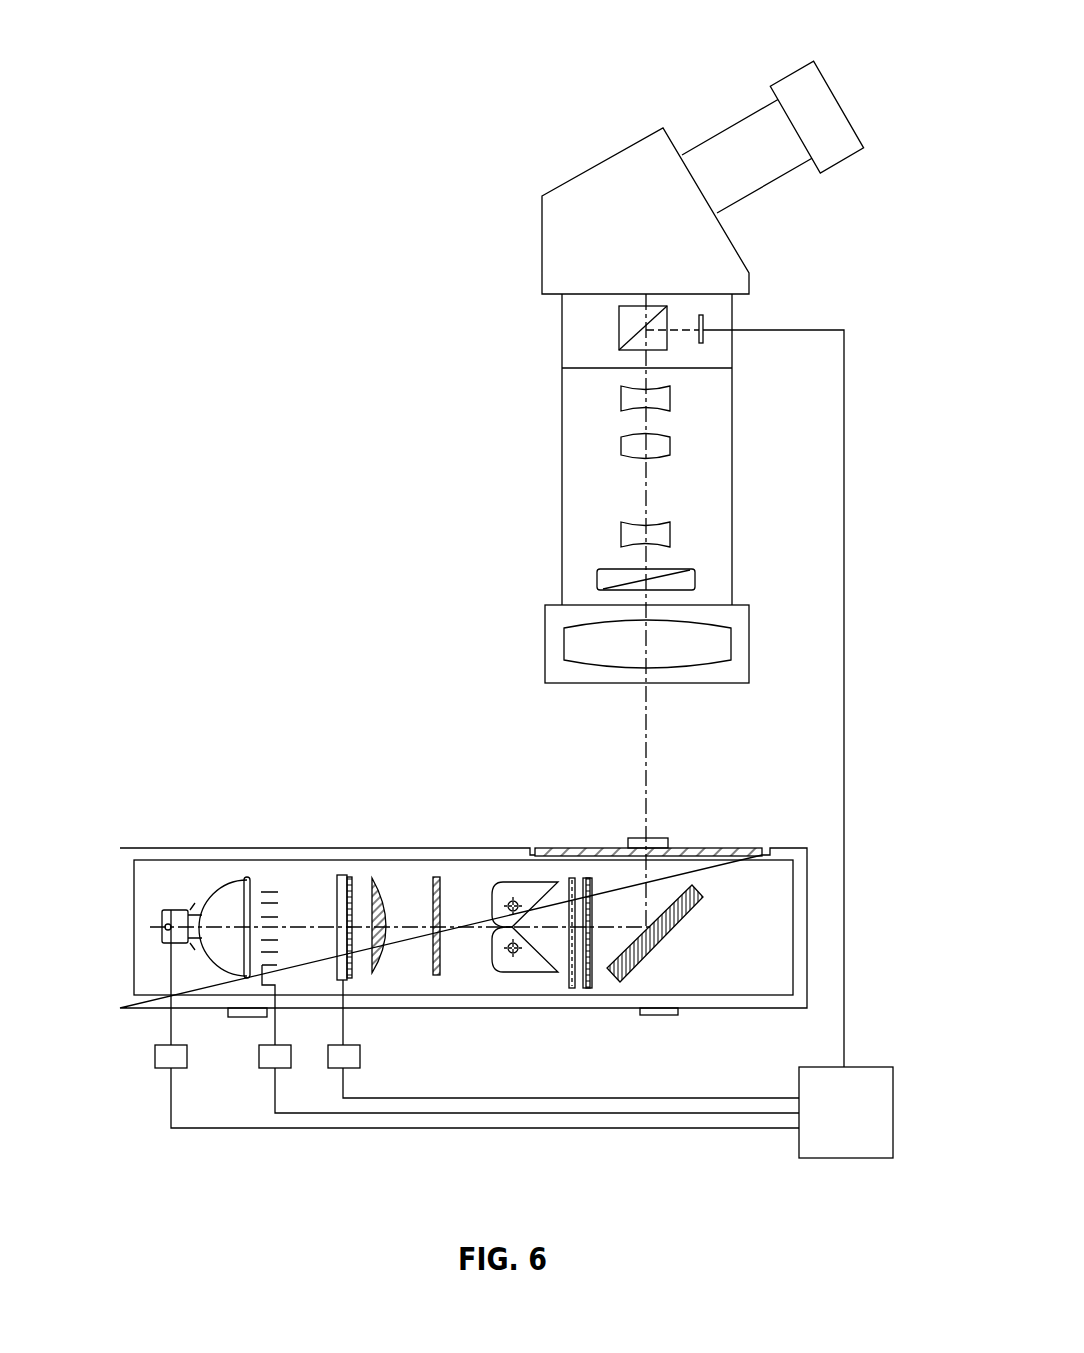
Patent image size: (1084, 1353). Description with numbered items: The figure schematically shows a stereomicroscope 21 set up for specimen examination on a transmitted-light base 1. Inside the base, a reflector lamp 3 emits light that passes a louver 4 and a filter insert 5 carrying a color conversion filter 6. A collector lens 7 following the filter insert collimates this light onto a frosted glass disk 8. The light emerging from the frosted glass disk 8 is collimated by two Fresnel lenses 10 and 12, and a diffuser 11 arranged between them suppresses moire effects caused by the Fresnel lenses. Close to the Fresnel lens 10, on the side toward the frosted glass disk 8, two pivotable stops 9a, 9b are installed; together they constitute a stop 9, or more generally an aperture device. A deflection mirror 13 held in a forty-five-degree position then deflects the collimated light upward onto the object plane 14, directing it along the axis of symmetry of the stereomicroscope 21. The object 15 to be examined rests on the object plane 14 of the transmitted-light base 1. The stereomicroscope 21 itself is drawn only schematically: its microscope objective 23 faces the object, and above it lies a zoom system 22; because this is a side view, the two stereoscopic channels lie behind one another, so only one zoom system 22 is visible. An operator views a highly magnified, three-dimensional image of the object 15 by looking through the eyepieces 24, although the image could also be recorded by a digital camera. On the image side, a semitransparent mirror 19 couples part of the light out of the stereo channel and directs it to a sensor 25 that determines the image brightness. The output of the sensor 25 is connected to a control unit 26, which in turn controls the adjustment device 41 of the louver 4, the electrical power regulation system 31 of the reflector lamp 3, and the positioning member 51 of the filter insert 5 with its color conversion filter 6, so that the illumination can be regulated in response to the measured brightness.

The transmitted-light base 1 is at (265, 750).
The reflector lamp 3 is at (225, 907).
The louver 4 is at (262, 875).
The filter insert 5 is at (337, 877).
The color conversion filter 6 is at (347, 875).
The collector lens 7 is at (375, 880).
The frosted glass disk 8 is at (435, 878).
The stop 9 is at (505, 910).
The pivotable stop 9a is at (505, 893).
The pivotable stop 9b is at (500, 968).
The Fresnel lens 10 is at (572, 878).
The diffuser 11 is at (585, 878).
The Fresnel lens 12 is at (590, 878).
The deflection mirror 13 is at (650, 942).
The object plane 14 is at (703, 848).
The object 15 is at (658, 838).
The semitransparent mirror 19 is at (619, 330).
The stereomicroscope 21 is at (525, 227).
The zoom system 22 is at (542, 463).
The microscope objective 23 is at (582, 639).
The eyepieces 24 is at (712, 78).
The sensor 25 is at (704, 318).
The control unit 26 is at (846, 1112).
The electrical power regulation system 31 is at (155, 1052).
The adjustment device 41 is at (259, 1052).
The positioning member 51 is at (360, 1055).